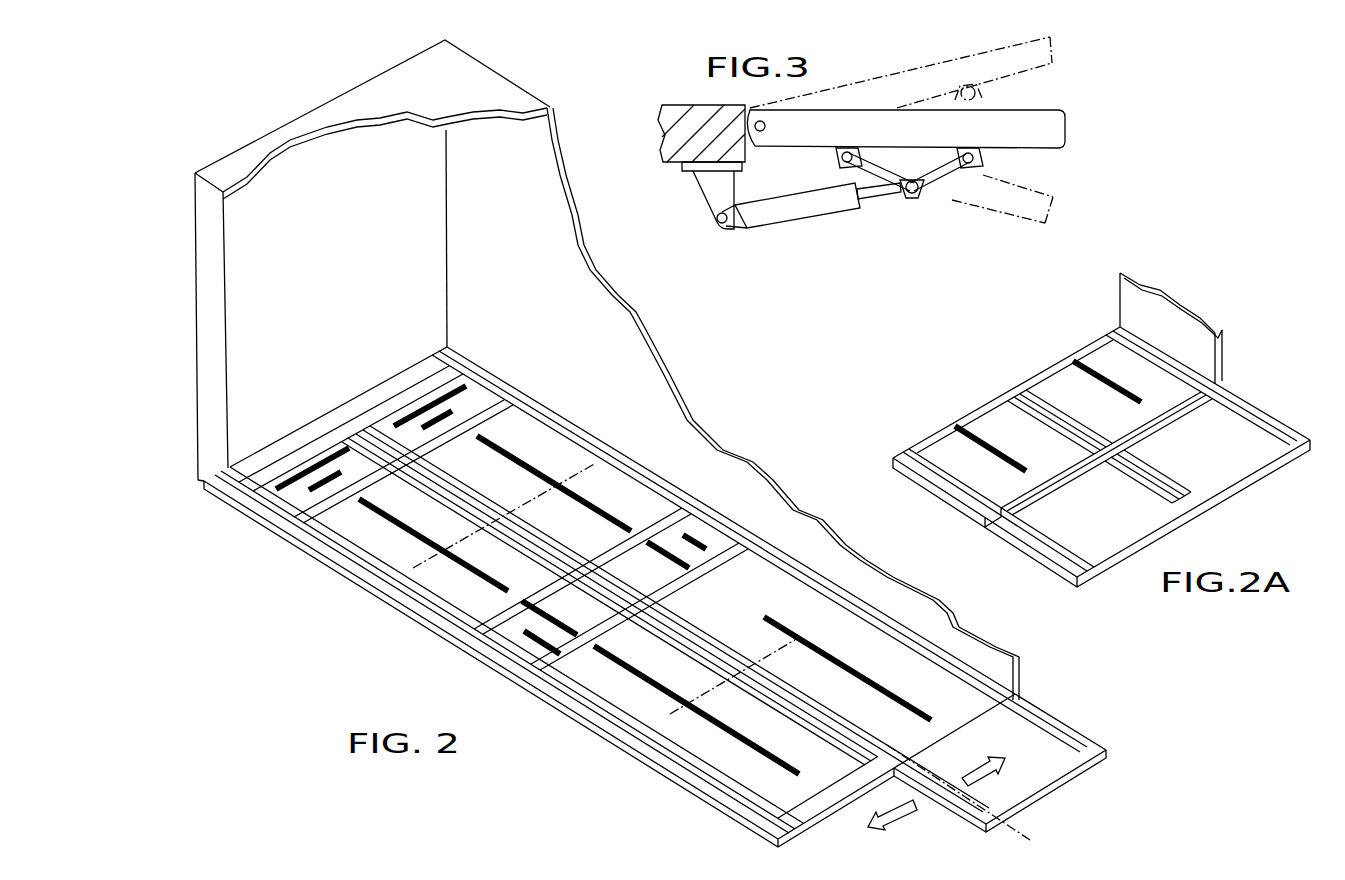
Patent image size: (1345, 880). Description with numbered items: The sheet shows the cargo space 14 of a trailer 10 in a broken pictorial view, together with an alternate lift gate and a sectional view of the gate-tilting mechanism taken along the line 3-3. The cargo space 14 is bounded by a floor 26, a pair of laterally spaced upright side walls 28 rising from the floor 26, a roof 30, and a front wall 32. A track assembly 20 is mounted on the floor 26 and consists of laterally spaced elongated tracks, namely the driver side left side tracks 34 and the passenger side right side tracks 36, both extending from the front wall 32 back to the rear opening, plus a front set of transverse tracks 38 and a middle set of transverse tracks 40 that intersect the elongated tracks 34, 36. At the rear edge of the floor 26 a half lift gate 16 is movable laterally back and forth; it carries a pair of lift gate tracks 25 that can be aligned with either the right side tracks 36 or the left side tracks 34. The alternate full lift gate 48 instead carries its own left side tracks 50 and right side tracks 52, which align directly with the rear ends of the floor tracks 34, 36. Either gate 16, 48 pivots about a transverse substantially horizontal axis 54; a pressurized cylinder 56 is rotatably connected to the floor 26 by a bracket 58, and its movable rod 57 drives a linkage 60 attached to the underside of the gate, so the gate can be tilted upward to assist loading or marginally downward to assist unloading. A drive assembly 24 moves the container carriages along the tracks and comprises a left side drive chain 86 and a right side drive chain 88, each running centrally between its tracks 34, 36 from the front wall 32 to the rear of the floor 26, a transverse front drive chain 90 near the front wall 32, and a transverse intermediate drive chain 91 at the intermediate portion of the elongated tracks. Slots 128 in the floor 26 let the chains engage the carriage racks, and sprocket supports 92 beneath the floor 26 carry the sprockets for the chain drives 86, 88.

In FIG. 2, the trailer 10 is at (550, 96).
In FIG. 2, the cargo space 14 is at (600, 322).
In FIG. 2, the half lift gate 16 is at (1052, 770).
In FIG. 2, the track assembly 20 is at (672, 774).
In FIG. 2A, the track assembly 20 is at (1010, 453).
In FIG. 2, the drive assembly 24 is at (296, 490).
In FIG. 2A, the drive assembly 24 is at (1097, 364).
In FIG. 2, the lift gate tracks 25 is at (1028, 742).
In FIG. 2, the floor 26 is at (813, 823).
In FIG. 2A, the floor 26 is at (912, 493).
In FIG. 2, the side walls 28 is at (512, 217).
In FIG. 2A, the side walls 28 is at (1171, 328).
In FIG. 2, the roof 30 is at (487, 83).
In FIG. 2, the front wall 32 is at (346, 237).
In FIG. 2, the left side tracks 34 is at (430, 502).
In FIG. 2A, the left side tracks 34 is at (1047, 437).
In FIG. 2, the right side tracks 36 is at (545, 517).
In FIG. 2A, the right side tracks 36 is at (1103, 426).
In FIG. 2, the front set of transverse tracks 38 is at (430, 437).
In FIG. 2, the middle set of transverse tracks 40 is at (574, 565).
In FIG. 2A, the full lift gate 48 is at (1245, 494).
In FIG. 2A, the left side tracks 50 is at (1133, 490).
In FIG. 2A, the right side tracks 52 is at (1160, 470).
In FIG. 3, the transverse horizontal axis 54 is at (765, 132).
In FIG. 3, the pressurized cylinder 56 is at (810, 208).
In FIG. 3, the rod 57 is at (885, 200).
In FIG. 3, the bracket 58 is at (708, 182).
In FIG. 3, the linkage 60 is at (935, 192).
In FIG. 2, the left side drive chain 86 is at (516, 589).
In FIG. 2A, the left side drive chain 86 is at (982, 421).
In FIG. 2, the right side drive chain 88 is at (531, 462).
In FIG. 2A, the right side drive chain 88 is at (1112, 398).
In FIG. 2, the front drive chain 90 is at (444, 384).
In FIG. 2, the intermediate drive chain 91 is at (590, 610).
In FIG. 2, the sprocket supports 92 is at (645, 552).
In FIG. 2, the slots 128 is at (642, 684).
In FIG. 2, the section line 3- 3 is at (906, 729).